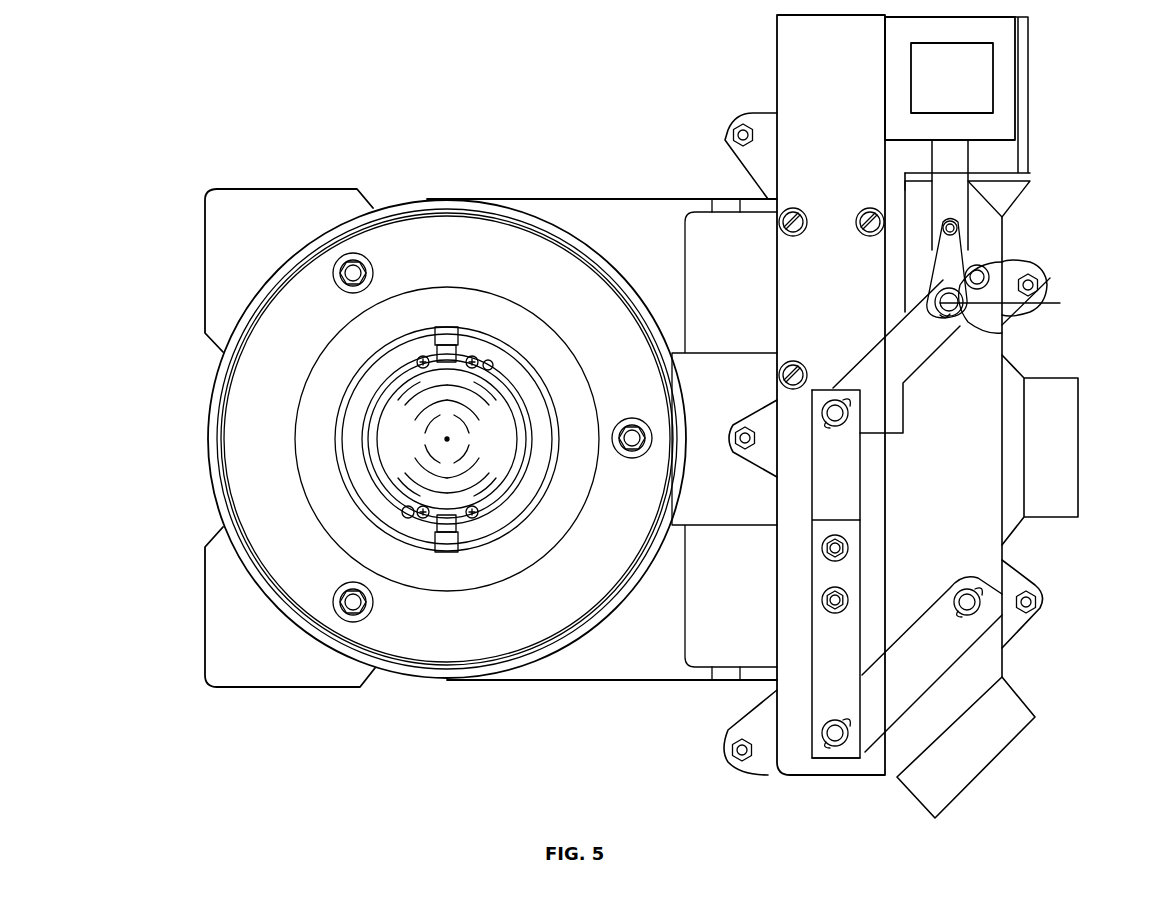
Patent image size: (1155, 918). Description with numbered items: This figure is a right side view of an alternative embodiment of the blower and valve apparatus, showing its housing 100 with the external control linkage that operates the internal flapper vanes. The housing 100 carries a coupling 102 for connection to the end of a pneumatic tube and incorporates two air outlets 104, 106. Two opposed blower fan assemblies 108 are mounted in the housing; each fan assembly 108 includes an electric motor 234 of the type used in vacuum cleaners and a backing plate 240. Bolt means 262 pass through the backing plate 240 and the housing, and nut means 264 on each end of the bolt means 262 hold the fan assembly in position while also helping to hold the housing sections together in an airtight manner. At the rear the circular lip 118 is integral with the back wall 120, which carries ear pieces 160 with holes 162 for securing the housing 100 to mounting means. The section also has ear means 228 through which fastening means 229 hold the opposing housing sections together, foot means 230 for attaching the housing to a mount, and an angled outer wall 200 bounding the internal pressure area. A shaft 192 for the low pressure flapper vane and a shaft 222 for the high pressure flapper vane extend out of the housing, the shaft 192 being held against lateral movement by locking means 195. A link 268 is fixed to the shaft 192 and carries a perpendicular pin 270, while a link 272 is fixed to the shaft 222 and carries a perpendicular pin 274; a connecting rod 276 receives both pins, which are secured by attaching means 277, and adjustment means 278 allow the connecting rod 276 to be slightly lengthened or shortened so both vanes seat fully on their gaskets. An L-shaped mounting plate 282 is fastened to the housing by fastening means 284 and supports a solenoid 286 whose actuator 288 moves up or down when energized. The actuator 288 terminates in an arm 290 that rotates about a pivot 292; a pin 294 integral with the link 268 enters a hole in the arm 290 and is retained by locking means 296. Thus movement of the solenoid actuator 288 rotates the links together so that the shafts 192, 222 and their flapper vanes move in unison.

The housing 100 is at (378, 778).
The coupling 102 is at (1080, 442).
The air outlet 104 is at (1030, 172).
The air outlet 106 is at (985, 768).
The blower fan assembly 108 is at (345, 508).
The circular lip 118 is at (445, 199).
The back wall 120 is at (207, 422).
The ear piece 160 is at (207, 278).
The hole 162 is at (276, 189).
The shaft 192 is at (975, 265).
The locking means 195 is at (1008, 277).
The angled outer wall 200 is at (741, 617).
The shaft 222 is at (1038, 596).
The ear means 228 is at (747, 764).
The fastening means 229 is at (745, 413).
The foot means 230 is at (703, 198).
The electric motor 234 is at (485, 387).
The backing plate 240 is at (276, 440).
The bolt means 262 is at (362, 270).
The nut means 264 is at (345, 268).
The link 268 is at (912, 372).
The perpendicular pin 270 is at (838, 426).
The link 272 is at (935, 655).
The perpendicular pin 274 is at (833, 748).
The connecting rod 276 is at (862, 648).
The attaching means 277 is at (850, 402).
The adjustment means 278 is at (850, 546).
The L-shaped mounting plate 282 is at (881, 309).
The fastening means 284 is at (871, 208).
The solenoid 286 is at (1005, 78).
The actuator 288 is at (985, 198).
The arm 290 is at (962, 258).
The pivot 292 is at (957, 228).
The pin 294 is at (1005, 337).
The locking means 296 is at (965, 302).